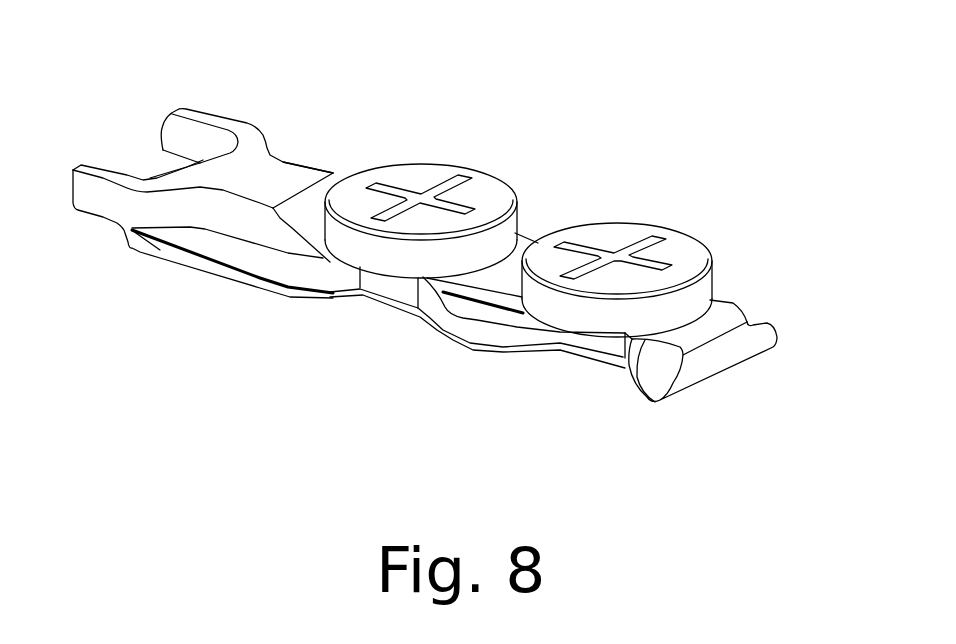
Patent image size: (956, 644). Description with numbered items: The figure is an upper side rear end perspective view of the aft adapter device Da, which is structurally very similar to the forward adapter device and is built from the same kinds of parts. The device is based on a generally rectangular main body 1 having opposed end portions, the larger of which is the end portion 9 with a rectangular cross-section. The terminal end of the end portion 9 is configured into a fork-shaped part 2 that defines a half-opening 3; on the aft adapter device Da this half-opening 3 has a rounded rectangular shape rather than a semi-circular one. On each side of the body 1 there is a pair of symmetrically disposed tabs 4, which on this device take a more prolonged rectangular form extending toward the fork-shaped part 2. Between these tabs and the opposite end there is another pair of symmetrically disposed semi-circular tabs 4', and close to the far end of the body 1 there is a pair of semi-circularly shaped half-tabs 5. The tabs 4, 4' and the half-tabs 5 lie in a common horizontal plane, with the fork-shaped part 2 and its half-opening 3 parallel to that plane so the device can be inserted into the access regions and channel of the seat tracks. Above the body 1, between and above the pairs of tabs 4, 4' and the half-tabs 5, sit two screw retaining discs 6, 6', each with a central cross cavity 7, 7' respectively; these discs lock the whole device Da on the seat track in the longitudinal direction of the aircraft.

The main body 1 is at (380, 284).
The fork-shaped part 2 is at (221, 121).
The half-opening 3 is at (140, 157).
The semi-circular tabs 4 is at (232, 284).
The semi-circular tabs 4' is at (469, 359).
The half-tabs 5 is at (757, 322).
The screw retaining disc 6 is at (421, 178).
The central cross cavity 7 is at (444, 153).
The screw retaining disc 6' is at (617, 240).
The central cross cavity 7' is at (632, 226).
The end portion 9 is at (302, 170).
The aft adapter device Da is at (603, 98).